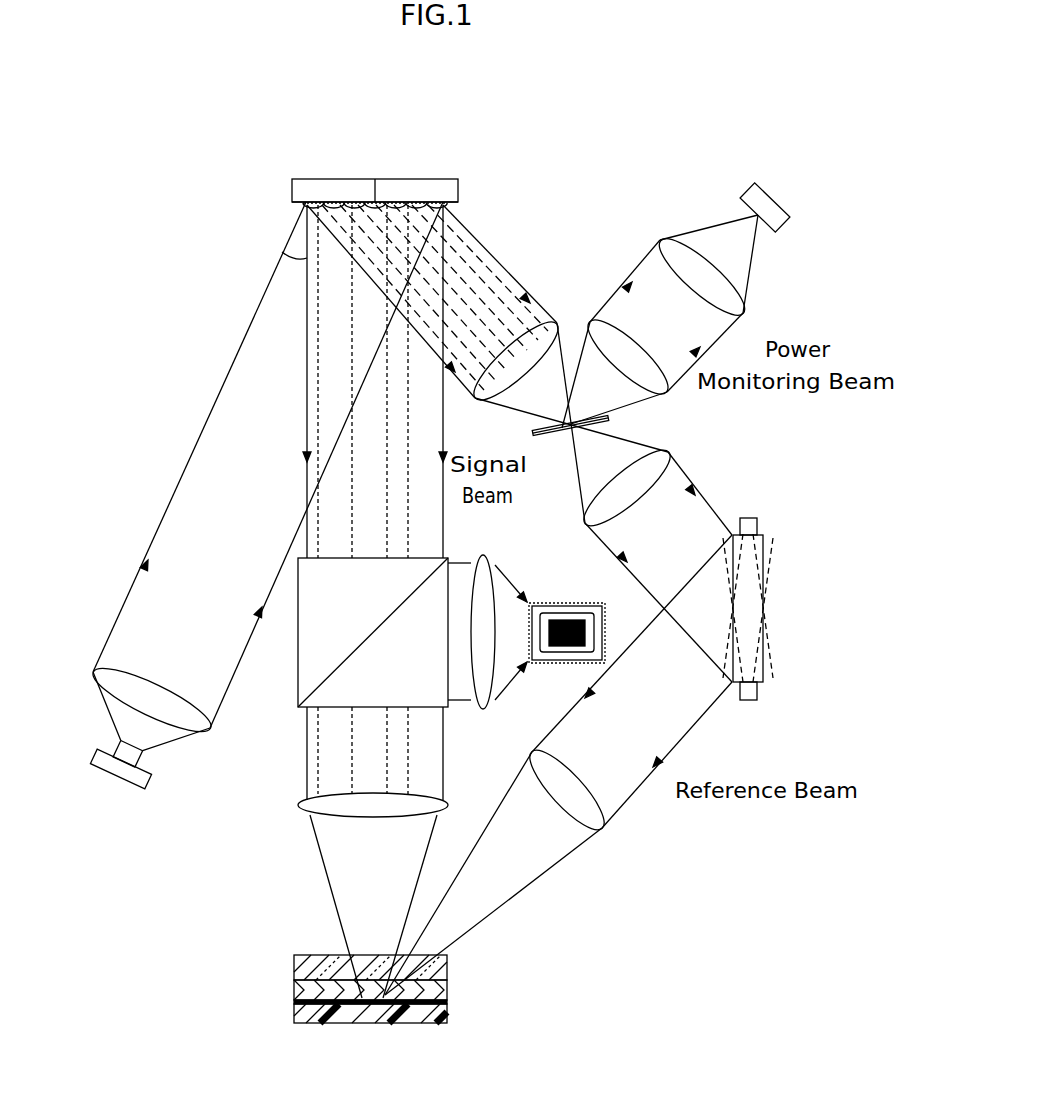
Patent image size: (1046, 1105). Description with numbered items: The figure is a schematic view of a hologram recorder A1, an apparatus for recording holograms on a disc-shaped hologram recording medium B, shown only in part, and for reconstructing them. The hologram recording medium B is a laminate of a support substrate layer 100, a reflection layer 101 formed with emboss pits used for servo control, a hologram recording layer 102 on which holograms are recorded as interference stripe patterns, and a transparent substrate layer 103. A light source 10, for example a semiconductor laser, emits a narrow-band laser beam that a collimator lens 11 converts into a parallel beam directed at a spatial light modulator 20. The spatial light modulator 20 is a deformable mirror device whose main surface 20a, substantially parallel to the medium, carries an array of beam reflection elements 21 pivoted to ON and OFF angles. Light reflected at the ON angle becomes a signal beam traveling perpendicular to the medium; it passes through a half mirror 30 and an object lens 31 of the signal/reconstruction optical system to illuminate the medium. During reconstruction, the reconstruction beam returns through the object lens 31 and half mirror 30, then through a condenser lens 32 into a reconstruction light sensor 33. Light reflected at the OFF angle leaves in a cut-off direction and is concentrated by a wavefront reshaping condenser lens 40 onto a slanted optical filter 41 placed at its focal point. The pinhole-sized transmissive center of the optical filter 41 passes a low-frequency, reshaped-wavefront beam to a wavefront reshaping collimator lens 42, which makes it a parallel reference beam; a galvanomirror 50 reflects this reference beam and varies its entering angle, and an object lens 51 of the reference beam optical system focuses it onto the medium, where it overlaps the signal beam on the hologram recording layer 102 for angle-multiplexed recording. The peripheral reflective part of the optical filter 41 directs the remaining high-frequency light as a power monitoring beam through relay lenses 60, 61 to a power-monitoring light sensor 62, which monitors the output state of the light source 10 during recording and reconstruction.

The hologram recorder A1 is at (514, 126).
The light source 10 is at (102, 762).
The collimator lens 11 is at (93, 672).
The spatial light modulator 20 is at (315, 187).
The main surface 20a is at (458, 206).
The beam reflection element 21 is at (350, 208).
The half mirror 30 is at (298, 707).
The object lens 31 is at (298, 806).
The condenser lens 32 is at (487, 565).
The reconstruction light sensor 33 is at (575, 604).
The condenser lens 40 is at (554, 324).
The optical filter 41 is at (543, 436).
The collimator lens 42 is at (668, 452).
The galvanomirror 50 is at (764, 535).
The object lens 51 is at (604, 830).
The relay lens 60 is at (592, 322).
The relay lens 61 is at (660, 240).
The power-monitoring light sensor 62 is at (760, 186).
The hologram recording medium B is at (370, 992).
The support substrate layer 100 is at (443, 1017).
The reflection layer 101 is at (443, 1002).
The hologram recording layer 102 is at (443, 990).
The transparent substrate layer 103 is at (443, 966).